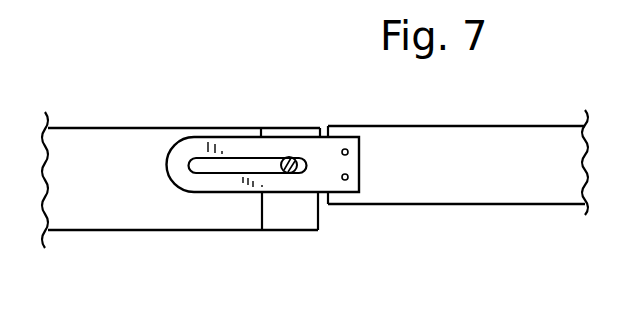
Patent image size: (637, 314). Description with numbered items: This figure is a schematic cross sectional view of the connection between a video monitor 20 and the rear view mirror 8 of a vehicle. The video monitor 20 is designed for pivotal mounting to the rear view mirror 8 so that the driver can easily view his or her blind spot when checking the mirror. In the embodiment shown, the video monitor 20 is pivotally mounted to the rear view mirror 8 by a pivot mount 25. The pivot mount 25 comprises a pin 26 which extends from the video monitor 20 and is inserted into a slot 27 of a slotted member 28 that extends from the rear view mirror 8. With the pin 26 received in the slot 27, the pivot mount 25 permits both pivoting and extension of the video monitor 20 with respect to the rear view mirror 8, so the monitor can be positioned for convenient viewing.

The video monitor 20 is at (152, 127).
The rear view mirror 8 is at (495, 126).
The pivot mount 25 is at (329, 207).
The pin 26 is at (290, 158).
The slot 27 is at (242, 162).
The slotted member 28 is at (254, 148).